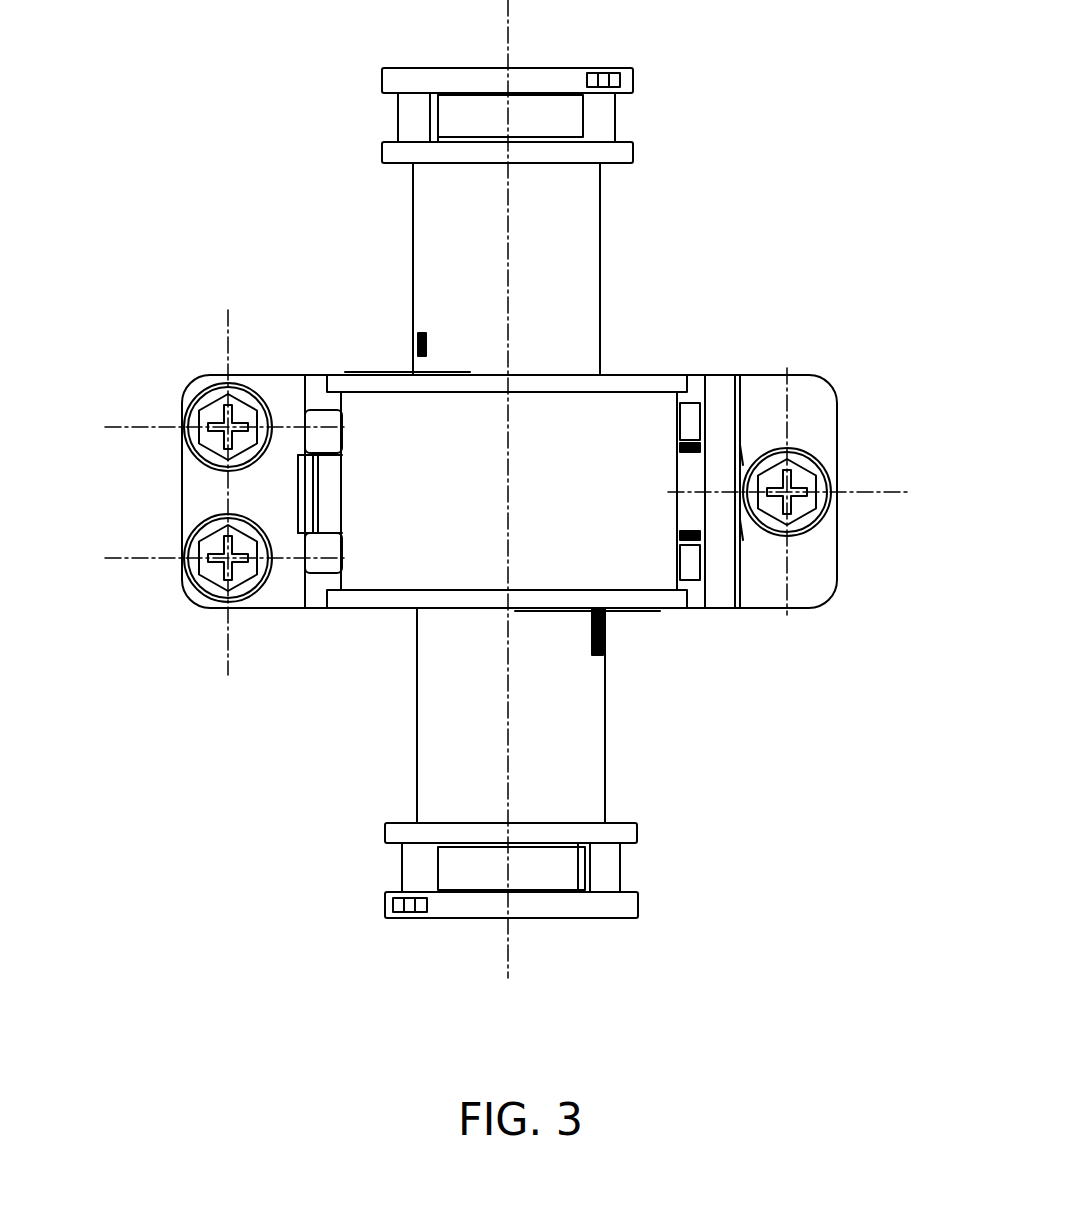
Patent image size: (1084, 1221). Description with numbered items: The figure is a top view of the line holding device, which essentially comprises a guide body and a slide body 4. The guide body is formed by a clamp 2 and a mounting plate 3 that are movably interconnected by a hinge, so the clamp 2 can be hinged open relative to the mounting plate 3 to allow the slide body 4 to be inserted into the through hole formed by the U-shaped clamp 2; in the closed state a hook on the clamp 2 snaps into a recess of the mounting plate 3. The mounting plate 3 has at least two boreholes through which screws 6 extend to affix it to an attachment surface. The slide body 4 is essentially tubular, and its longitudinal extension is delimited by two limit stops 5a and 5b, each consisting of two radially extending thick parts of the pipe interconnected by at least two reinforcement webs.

The clamp 2 is at (543, 451).
The mounting plate 3 is at (507, 492).
The slide body 4 is at (575, 273).
The limit stop 5a is at (561, 119).
The limit stop 5b is at (570, 832).
The screw 6 is at (498, 492).